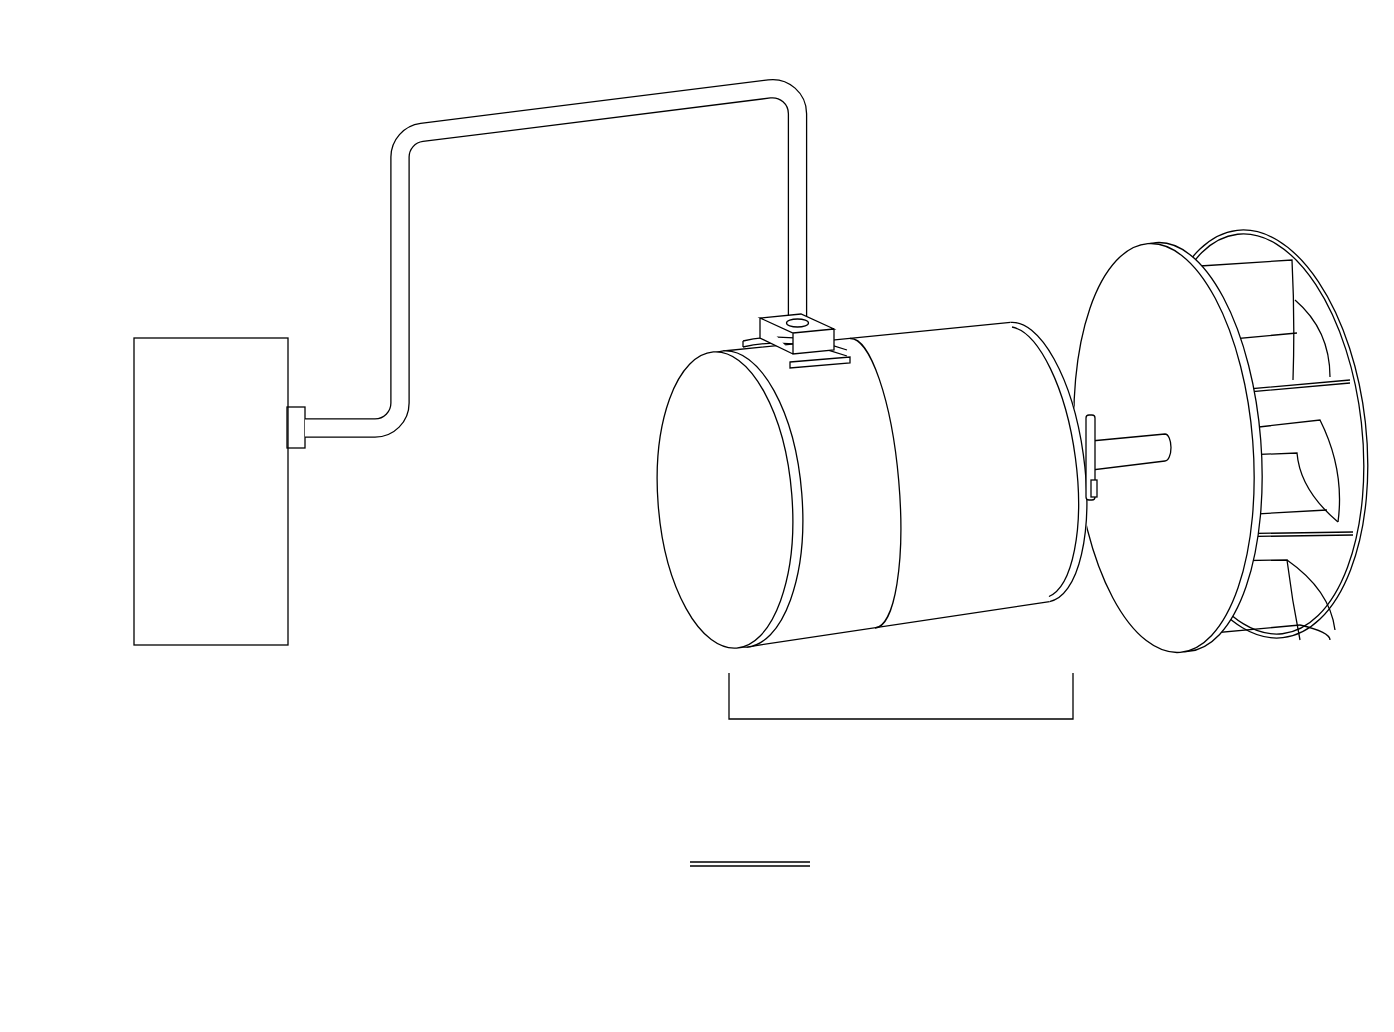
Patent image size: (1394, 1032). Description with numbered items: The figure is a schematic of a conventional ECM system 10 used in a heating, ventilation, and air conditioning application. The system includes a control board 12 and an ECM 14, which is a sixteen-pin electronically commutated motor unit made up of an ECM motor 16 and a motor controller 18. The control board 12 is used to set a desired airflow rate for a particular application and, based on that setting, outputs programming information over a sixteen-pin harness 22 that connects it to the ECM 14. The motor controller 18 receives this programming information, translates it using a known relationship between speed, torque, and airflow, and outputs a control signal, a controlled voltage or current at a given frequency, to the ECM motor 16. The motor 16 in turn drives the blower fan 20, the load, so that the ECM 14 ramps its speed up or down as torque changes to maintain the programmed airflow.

The ECM system 10 is at (230, 247).
The control board 12 is at (201, 640).
The ECM 14 is at (881, 558).
The ECM motor 16 is at (933, 605).
The motor controller 18 is at (805, 411).
The blower fan 20 is at (1203, 618).
The sixteen-pin harness 22 is at (552, 123).